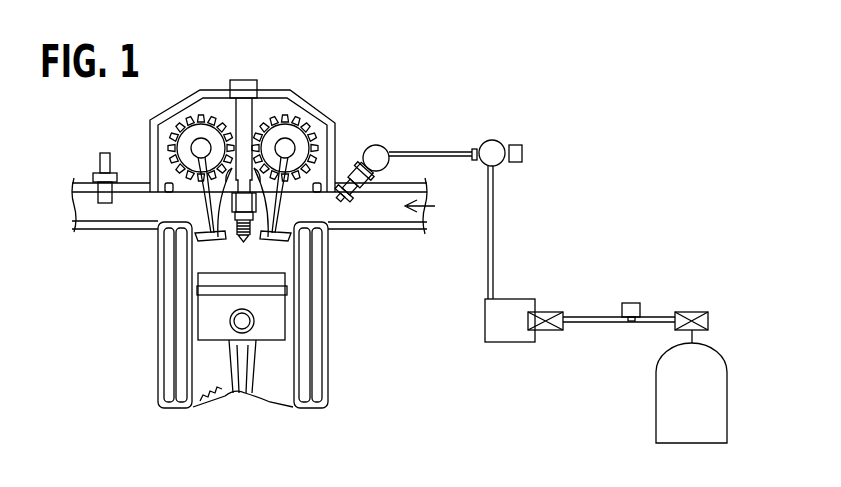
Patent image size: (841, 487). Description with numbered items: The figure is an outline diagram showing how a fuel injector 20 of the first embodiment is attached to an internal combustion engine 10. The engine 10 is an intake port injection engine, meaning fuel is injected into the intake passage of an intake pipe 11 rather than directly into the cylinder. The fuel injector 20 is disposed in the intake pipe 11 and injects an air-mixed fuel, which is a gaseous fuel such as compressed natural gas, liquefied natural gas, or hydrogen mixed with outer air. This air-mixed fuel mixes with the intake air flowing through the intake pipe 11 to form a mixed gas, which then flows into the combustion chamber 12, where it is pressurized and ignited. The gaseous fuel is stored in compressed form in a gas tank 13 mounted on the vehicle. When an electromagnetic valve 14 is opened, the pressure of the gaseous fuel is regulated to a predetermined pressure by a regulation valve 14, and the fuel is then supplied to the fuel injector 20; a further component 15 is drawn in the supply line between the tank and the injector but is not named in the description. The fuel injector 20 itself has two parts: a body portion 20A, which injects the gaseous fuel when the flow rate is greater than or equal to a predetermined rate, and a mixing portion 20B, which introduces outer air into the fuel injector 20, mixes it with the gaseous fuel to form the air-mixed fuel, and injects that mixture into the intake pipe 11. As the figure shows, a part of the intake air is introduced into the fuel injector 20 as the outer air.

The internal combustion engine 10 is at (253, 244).
The intake pipe 11 is at (412, 232).
The combustion chamber 12 is at (215, 263).
The gas tank 13 is at (655, 403).
The electromagnetic valve 14 is at (552, 312).
The regulator 15 is at (525, 152).
The fuel injector 20 is at (400, 210).
The body portion 20A is at (361, 175).
The mixing portion 20B is at (340, 170).